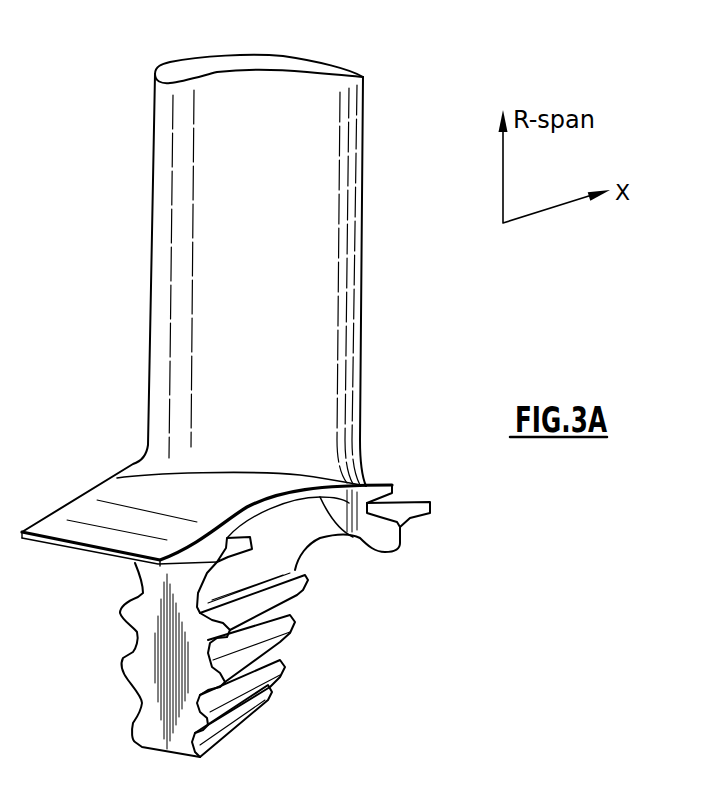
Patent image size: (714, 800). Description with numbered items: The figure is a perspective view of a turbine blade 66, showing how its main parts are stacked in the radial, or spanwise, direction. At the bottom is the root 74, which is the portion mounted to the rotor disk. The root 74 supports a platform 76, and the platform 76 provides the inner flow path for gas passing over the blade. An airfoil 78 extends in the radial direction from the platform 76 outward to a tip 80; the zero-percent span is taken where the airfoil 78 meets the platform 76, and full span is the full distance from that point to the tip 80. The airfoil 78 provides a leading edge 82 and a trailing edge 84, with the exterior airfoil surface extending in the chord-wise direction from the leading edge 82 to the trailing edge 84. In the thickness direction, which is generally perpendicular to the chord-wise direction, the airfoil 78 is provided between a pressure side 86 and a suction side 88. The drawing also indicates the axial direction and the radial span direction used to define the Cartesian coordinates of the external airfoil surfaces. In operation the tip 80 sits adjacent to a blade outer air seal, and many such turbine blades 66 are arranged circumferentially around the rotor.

The turbine blade 66 is at (108, 218).
The root 74 is at (160, 660).
The platform 76 is at (270, 483).
The airfoil 78 is at (312, 362).
The tip 80 is at (170, 62).
The leading edge 82 is at (152, 231).
The trailing edge 84 is at (362, 217).
The pressure side 86 is at (263, 281).
The suction side 88 is at (292, 44).